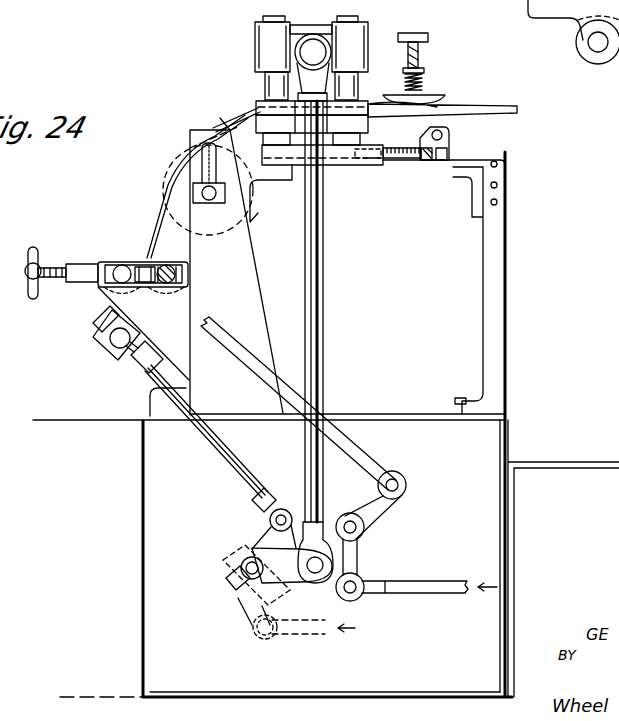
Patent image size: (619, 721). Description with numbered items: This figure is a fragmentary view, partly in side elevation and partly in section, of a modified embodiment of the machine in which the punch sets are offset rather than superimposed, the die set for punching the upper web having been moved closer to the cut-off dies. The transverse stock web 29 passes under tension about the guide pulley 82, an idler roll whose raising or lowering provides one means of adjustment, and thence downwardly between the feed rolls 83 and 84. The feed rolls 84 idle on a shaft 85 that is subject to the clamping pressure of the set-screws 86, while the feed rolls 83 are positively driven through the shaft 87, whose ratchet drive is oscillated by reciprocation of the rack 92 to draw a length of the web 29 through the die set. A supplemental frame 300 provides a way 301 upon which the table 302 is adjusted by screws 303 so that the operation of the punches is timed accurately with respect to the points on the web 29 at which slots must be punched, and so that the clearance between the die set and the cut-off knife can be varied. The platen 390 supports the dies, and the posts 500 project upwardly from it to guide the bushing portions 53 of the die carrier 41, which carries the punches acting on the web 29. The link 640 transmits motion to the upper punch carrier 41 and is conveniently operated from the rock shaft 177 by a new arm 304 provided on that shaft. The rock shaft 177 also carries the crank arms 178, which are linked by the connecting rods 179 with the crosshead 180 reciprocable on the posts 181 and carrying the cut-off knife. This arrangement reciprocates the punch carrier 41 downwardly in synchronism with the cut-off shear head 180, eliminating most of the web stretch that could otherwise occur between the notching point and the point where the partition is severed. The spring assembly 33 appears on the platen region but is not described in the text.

The post 500 is at (270, 18).
The die carrier 41 is at (318, 24).
The bushing portion 53 is at (260, 50).
The transverse stock web 29 is at (226, 118).
The platen 390 is at (365, 130).
The compression spring 33 is at (436, 98).
The table 302 is at (332, 163).
The screws 303 is at (410, 163).
The way 301 is at (392, 163).
The guide pulley 82 is at (157, 181).
The link 640 is at (323, 262).
The supplemental frame 300 is at (498, 266).
The set-screws 86 is at (36, 254).
The shaft 85 is at (118, 268).
The feed rolls 84 is at (134, 264).
The feed rolls 83 is at (172, 262).
The shaft 87 is at (176, 274).
The posts 181 is at (93, 323).
The crosshead 180 is at (118, 356).
The rack 92 is at (212, 330).
The connecting rods 179 is at (240, 486).
The crank arms 178 is at (268, 537).
The rock shaft 177 is at (242, 568).
The arm 304 is at (288, 584).